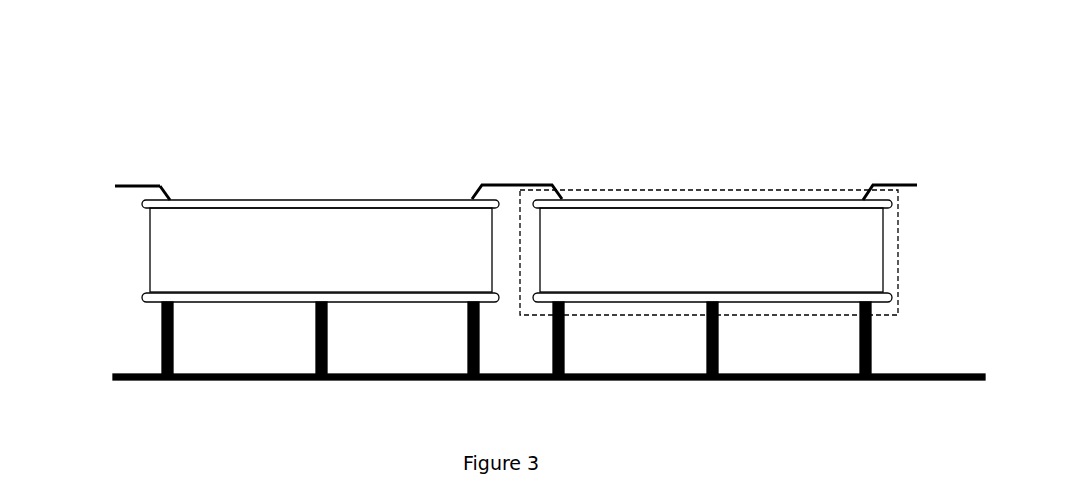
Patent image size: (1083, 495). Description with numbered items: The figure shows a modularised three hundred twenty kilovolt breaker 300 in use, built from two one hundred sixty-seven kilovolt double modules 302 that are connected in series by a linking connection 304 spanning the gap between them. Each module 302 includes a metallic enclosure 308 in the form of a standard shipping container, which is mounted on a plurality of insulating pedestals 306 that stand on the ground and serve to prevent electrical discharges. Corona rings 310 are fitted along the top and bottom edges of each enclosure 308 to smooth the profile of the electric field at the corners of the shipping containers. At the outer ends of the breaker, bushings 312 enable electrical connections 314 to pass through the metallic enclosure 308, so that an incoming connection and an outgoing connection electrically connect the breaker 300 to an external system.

The breaker 300 is at (402, 107).
The double module 302 is at (898, 278).
The linking connection 304 is at (508, 178).
The insulating pedestal 306 is at (563, 355).
The metallic enclosure 308 is at (765, 278).
The corona ring 310 is at (270, 198).
The bushing 312 is at (165, 201).
The electrical connection 314 is at (130, 182).